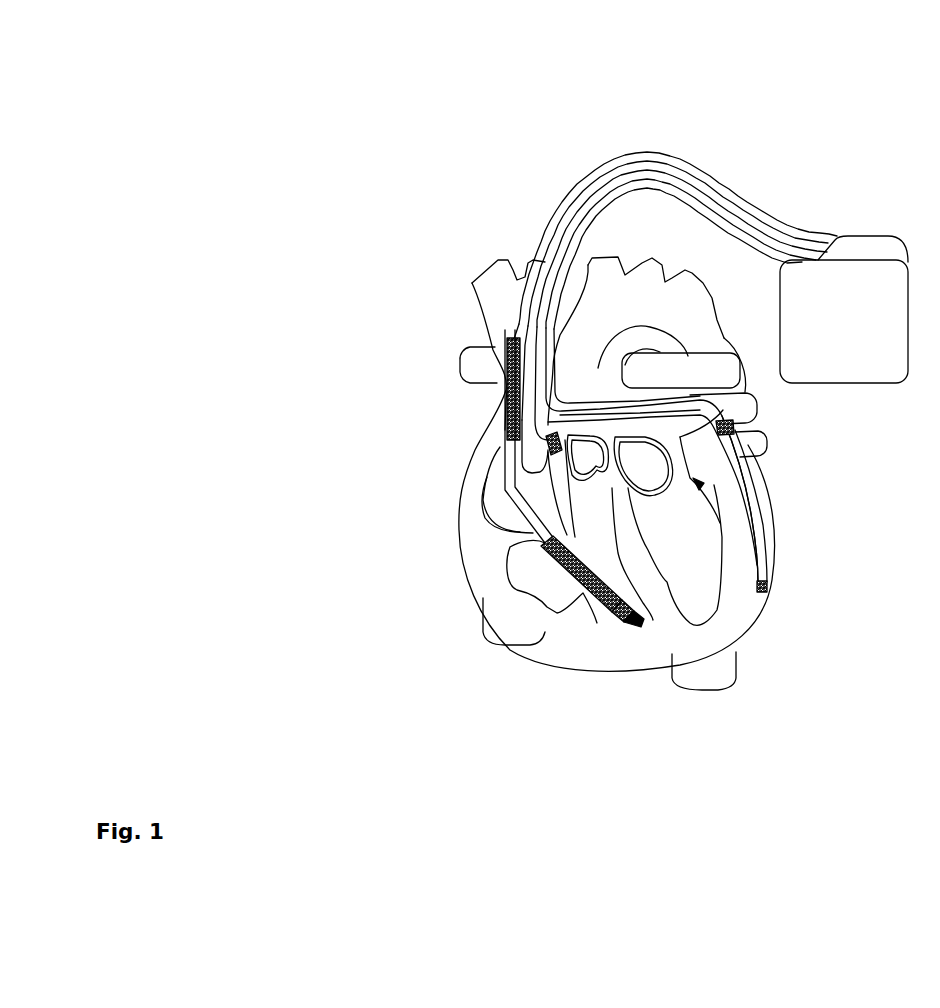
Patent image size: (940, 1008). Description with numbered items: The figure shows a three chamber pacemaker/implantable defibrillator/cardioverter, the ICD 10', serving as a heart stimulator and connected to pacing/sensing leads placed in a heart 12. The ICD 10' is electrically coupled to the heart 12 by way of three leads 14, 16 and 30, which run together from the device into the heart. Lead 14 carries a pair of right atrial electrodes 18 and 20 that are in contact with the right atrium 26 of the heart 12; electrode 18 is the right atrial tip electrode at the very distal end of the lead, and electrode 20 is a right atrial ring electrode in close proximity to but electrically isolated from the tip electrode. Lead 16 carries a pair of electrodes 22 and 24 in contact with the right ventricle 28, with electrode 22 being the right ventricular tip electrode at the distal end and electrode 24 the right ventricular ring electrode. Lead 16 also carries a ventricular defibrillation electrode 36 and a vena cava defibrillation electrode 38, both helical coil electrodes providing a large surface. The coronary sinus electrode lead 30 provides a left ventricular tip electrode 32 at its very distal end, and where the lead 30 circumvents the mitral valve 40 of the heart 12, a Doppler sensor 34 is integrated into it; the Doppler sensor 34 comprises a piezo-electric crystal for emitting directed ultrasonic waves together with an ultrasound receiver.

The implantable cardioverter defibrillator 10' is at (844, 353).
The heart 12 is at (423, 569).
The lead 14 is at (770, 237).
The lead 16 is at (688, 165).
The right atrial tip electrode 18 is at (548, 442).
The right atrial ring electrode 20 is at (545, 446).
The right ventricular tip electrode 22 is at (642, 628).
The right ventricular ring electrode 24 is at (627, 617).
The right atrium 26 is at (492, 507).
The right ventricle 28 is at (533, 567).
The coronary sinus electrode lead 30 is at (740, 235).
The left ventricular tip electrode 32 is at (767, 587).
The Doppler sensor 34 is at (720, 428).
The ventricular defibrillation electrode 36 is at (573, 580).
The vena cava defibrillation electrode 38 is at (508, 368).
The mitral valve 40 is at (699, 490).